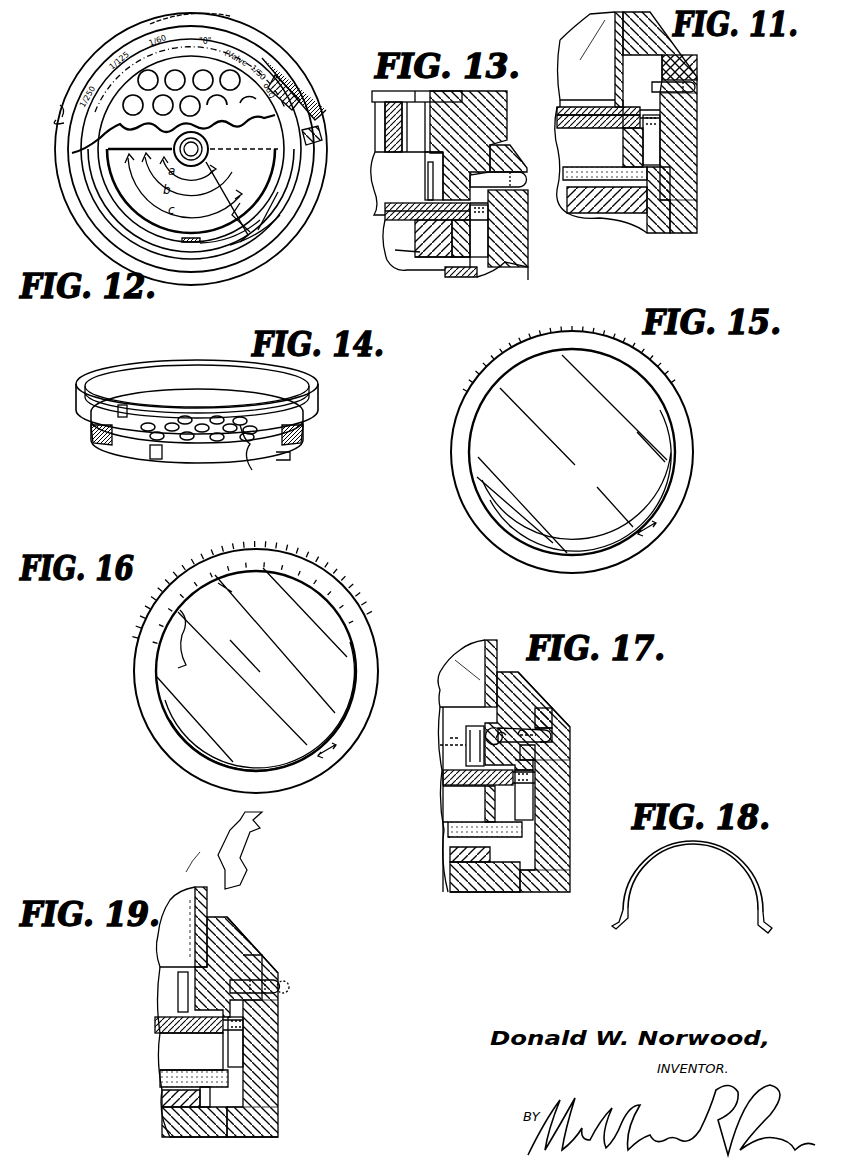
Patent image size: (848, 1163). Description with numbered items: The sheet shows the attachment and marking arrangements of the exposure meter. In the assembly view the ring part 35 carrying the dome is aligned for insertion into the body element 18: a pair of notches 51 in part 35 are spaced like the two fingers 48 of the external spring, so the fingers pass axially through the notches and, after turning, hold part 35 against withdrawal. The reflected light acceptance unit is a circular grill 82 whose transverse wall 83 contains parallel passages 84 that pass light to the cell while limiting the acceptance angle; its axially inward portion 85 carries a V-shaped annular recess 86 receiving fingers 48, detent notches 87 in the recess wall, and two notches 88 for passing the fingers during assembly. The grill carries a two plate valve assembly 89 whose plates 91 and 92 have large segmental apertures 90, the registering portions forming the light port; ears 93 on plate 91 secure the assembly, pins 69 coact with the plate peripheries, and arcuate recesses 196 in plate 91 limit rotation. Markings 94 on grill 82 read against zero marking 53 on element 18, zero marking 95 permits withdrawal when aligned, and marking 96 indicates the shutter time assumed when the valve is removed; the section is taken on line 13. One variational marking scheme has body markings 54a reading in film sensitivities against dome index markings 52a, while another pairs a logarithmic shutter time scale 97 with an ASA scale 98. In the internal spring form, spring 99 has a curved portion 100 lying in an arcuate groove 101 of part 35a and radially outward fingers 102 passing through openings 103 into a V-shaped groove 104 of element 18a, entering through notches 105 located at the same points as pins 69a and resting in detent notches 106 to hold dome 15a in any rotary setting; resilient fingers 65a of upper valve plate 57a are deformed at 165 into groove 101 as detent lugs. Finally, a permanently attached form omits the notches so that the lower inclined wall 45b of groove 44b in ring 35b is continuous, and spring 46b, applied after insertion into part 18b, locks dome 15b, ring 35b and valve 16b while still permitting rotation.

In FIG. 12, the reflected light grill 82 is at (248, 45).
In FIG. 13, the reflected light grill 82 is at (512, 108).
In FIG. 14, the reflected light grill 82 is at (322, 426).
In FIG. 12, the zero marking 53 is at (66, 115).
In FIG. 12, the markings 94 is at (166, 62).
In FIG. 12, the zero marking 95 is at (215, 32).
In FIG. 12, the 1/30 of a second shutter time marking 96 is at (282, 62).
In FIG. 12, the passages 84 is at (212, 78).
In FIG. 13, the passages 84 is at (417, 88).
In FIG. 14, the passages 84 is at (252, 470).
In FIG. 12, the plate 92 is at (170, 135).
In FIG. 13, the plate 92 is at (412, 240).
In FIG. 12, the plate 91 is at (208, 155).
In FIG. 13, the plate 91 is at (403, 211).
In FIG. 12, the transverse wall 83 is at (242, 133).
In FIG. 13, the transverse wall 83 is at (398, 153).
In FIG. 14, the transverse wall 83 is at (202, 432).
In FIG. 12, the section line 13 is at (261, 129).
In FIG. 12, the two plate valve assembly 89 is at (106, 185).
In FIG. 13, the two plate valve assembly 89 is at (428, 240).
In FIG. 12, the axially inwardly projecting portion 85 is at (290, 200).
In FIG. 13, the axially inwardly projecting portion 85 is at (506, 142).
In FIG. 14, the axially inwardly projecting portion 85 is at (305, 440).
In FIG. 12, the V-shaped annular recess 86 is at (262, 225).
In FIG. 13, the V-shaped annular recess 86 is at (500, 170).
In FIG. 14, the V-shaped annular recess 86 is at (290, 408).
In FIG. 12, the apertures 90 is at (243, 160).
In FIG. 12, the ears 93 is at (286, 186).
In FIG. 13, the ears 93 is at (432, 184).
In FIG. 13, the fingers 48 is at (522, 228).
In FIG. 11, the fingers 48 is at (665, 85).
In FIG. 13, the peripheral arcuate recesses 196 is at (490, 212).
In FIG. 13, the element 18 is at (520, 236).
In FIG. 13, the pins 69 is at (478, 245).
In FIG. 13, the detent notches 87 is at (433, 238).
In FIG. 11, the part 35 is at (626, 14).
In FIG. 11, the notches 51 is at (660, 103).
In FIG. 14, the notches 88 is at (122, 430).
In FIG. 15, the index markings 52a is at (465, 415).
In FIG. 15, the markings 54a is at (532, 300).
In FIG. 16, the first scale 97 is at (186, 645).
In FIG. 16, the scale 98 is at (190, 538).
In FIG. 17, the dome 15a is at (498, 640).
In FIG. 17, the element 18a is at (560, 828).
In FIG. 17, the notches 105 is at (552, 712).
In FIG. 17, the detent notches 106 is at (552, 735).
In FIG. 17, the circularly curved portion 100 is at (548, 736).
In FIG. 18, the circularly curved portion 100 is at (735, 868).
In FIG. 17, the internal retaining and detenting spring 99 is at (546, 720).
In FIG. 18, the internal retaining and detenting spring 99 is at (624, 884).
In FIG. 17, the arcuate groove 101 is at (518, 722).
In FIG. 17, the part 35a is at (560, 690).
In FIG. 17, the V-shaped annular groove 104 is at (550, 750).
In FIG. 17, the openings 103 is at (532, 748).
In FIG. 17, the resilient fingers 65a is at (466, 735).
In FIG. 17, the detent lugs 165 is at (462, 745).
In FIG. 17, the upper valve plate 57a is at (443, 772).
In FIG. 17, the pins 69a is at (525, 800).
In FIG. 18, the fingers 102 is at (764, 930).
In FIG. 19, the light acceptance dome 15b is at (182, 880).
In FIG. 19, the part 18b is at (262, 1065).
In FIG. 19, the ring 35b is at (250, 935).
In FIG. 19, the V-shaped groove 44b is at (258, 968).
In FIG. 19, the spring 46b is at (290, 987).
In FIG. 19, the lower inclined wall 45b is at (248, 1010).
In FIG. 19, the valve 16b is at (176, 1042).